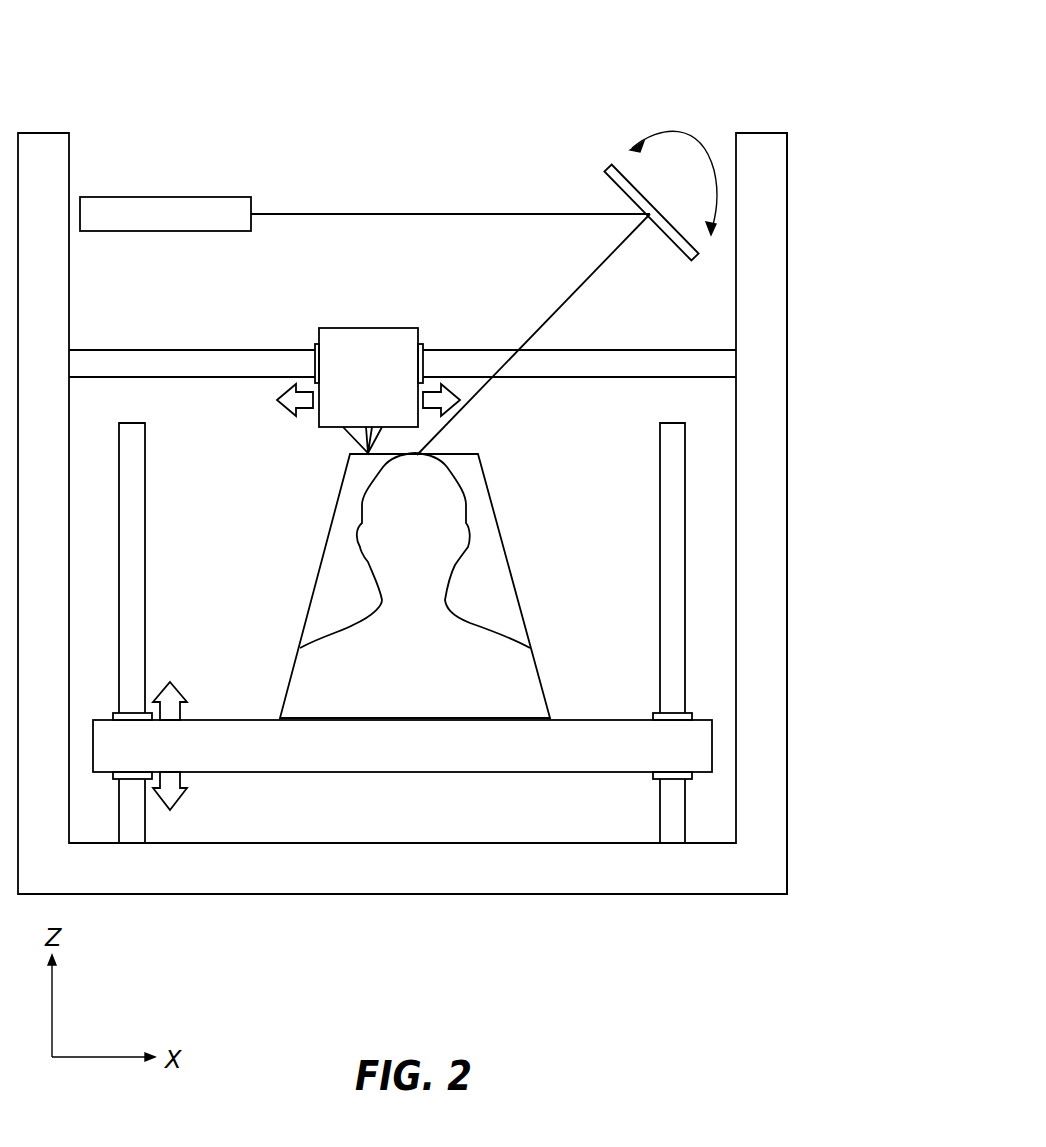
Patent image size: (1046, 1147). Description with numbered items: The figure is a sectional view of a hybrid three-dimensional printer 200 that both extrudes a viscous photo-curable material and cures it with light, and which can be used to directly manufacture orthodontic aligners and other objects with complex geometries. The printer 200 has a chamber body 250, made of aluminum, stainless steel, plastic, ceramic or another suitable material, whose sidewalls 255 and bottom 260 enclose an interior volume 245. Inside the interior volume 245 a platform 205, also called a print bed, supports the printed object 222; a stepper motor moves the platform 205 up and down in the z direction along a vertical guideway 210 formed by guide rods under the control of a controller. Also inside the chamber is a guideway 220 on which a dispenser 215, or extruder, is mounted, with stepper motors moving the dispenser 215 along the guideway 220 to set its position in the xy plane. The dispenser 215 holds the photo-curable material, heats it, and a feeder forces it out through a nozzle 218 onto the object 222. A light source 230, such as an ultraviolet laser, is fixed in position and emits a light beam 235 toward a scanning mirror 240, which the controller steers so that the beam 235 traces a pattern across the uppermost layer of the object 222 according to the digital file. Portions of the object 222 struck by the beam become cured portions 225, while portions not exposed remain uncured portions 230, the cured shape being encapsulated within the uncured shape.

The hybrid 3D printer 200 is at (819, 68).
The platform 205 is at (402, 746).
The vertical guideway 210 is at (660, 818).
The dispenser 215 is at (368, 377).
The nozzle 218 is at (350, 437).
The guideway 220 is at (163, 350).
The printed object 222 is at (511, 531).
The cured portions 225 is at (415, 561).
The light source 230 is at (165, 197).
The light beam 235 is at (388, 214).
The scanning mirror 240 is at (610, 170).
The interior volume 245 is at (197, 419).
The chamber body 250 is at (787, 368).
The sidewalls 255 is at (787, 746).
The bottom 260 is at (388, 894).